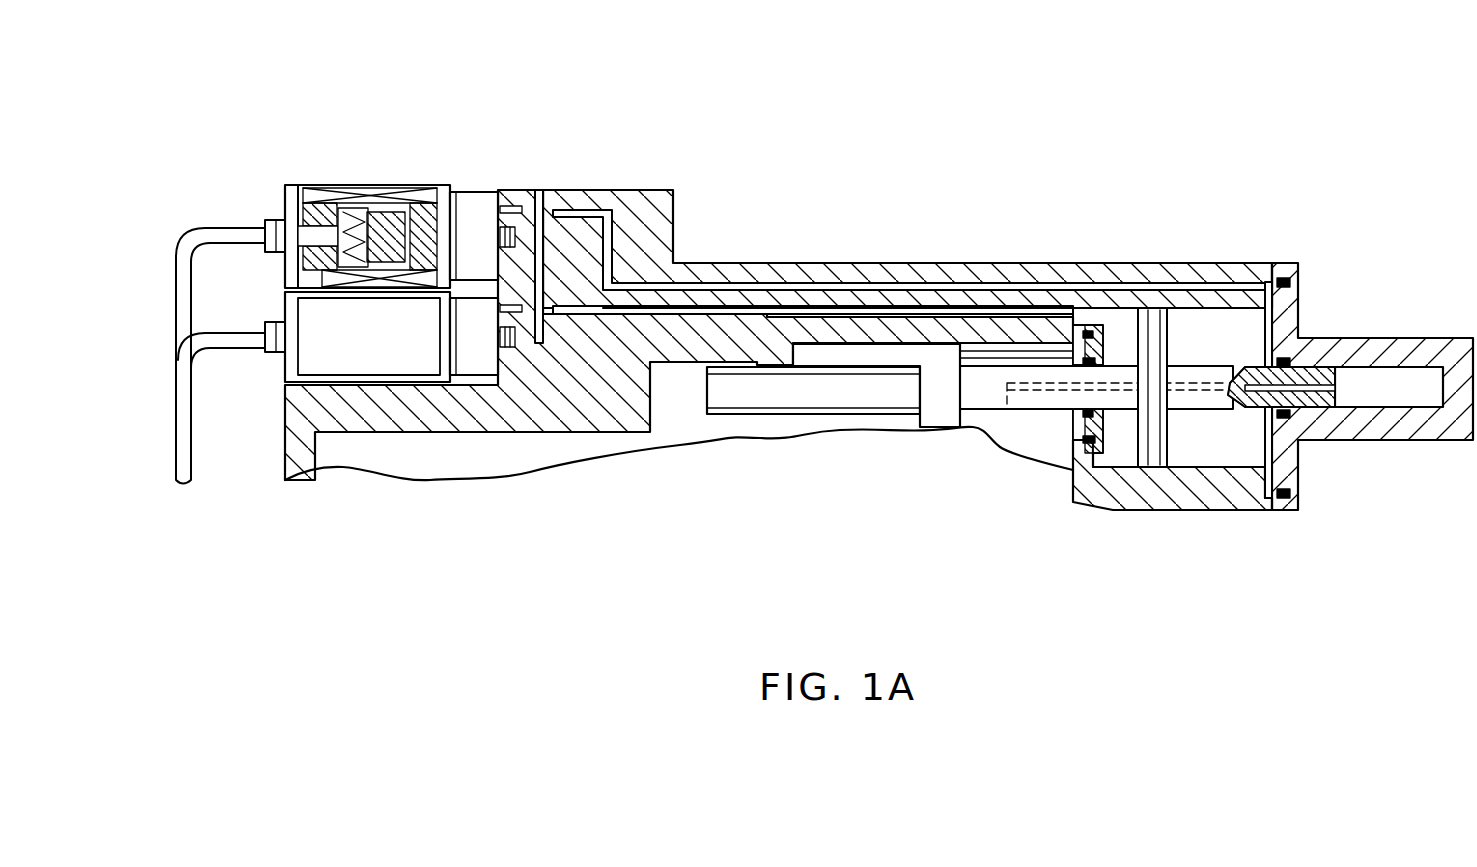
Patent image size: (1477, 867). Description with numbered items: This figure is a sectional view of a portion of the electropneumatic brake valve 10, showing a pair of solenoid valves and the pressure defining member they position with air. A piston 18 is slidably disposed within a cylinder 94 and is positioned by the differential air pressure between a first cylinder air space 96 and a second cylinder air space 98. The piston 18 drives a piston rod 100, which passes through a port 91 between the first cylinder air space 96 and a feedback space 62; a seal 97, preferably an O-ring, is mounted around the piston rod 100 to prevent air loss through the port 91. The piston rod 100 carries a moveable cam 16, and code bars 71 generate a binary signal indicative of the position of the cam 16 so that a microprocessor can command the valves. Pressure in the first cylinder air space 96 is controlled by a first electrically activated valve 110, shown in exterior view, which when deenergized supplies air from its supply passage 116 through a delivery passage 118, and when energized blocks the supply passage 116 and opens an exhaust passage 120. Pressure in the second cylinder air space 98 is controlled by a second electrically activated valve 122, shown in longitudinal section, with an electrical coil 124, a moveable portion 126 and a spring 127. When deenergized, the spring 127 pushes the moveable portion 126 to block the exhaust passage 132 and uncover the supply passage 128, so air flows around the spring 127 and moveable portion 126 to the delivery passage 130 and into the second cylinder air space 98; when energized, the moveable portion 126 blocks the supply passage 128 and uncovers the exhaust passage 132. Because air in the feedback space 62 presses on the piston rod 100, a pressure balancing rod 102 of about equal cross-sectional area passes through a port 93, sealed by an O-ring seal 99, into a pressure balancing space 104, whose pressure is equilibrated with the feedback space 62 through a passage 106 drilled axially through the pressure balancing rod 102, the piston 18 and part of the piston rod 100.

The electropneumatic brake valve 10 is at (732, 174).
The moveable cam 16 is at (940, 420).
The piston 18 is at (1165, 328).
The feedback space 62 is at (418, 462).
The code bars 71 is at (745, 373).
The port 91 is at (1077, 377).
The port 93 is at (1272, 400).
The cylinder 94 is at (1137, 488).
The first cylinder air space 96 is at (1092, 452).
The seal 97 is at (1078, 414).
The second cylinder air space 98 is at (1236, 316).
The seal 99 is at (1288, 356).
The piston rod 100 is at (1116, 325).
The pressure balancing rod 102 is at (1314, 368).
The pressure balancing space 104 is at (1408, 372).
The passage 106 is at (1300, 398).
The first electrically activated valve 110 is at (305, 315).
The supply passage 116 is at (234, 342).
The delivery passage 118 is at (748, 298).
The exhaust passage 120 is at (545, 267).
The second electrically activated valve 122 is at (279, 175).
The electrical coil 124 is at (330, 197).
The moveable portion 126 is at (410, 212).
The spring 127 is at (360, 210).
The supply passage 128 is at (233, 230).
The delivery passage 130 is at (600, 212).
The exhaust passage 132 is at (525, 200).